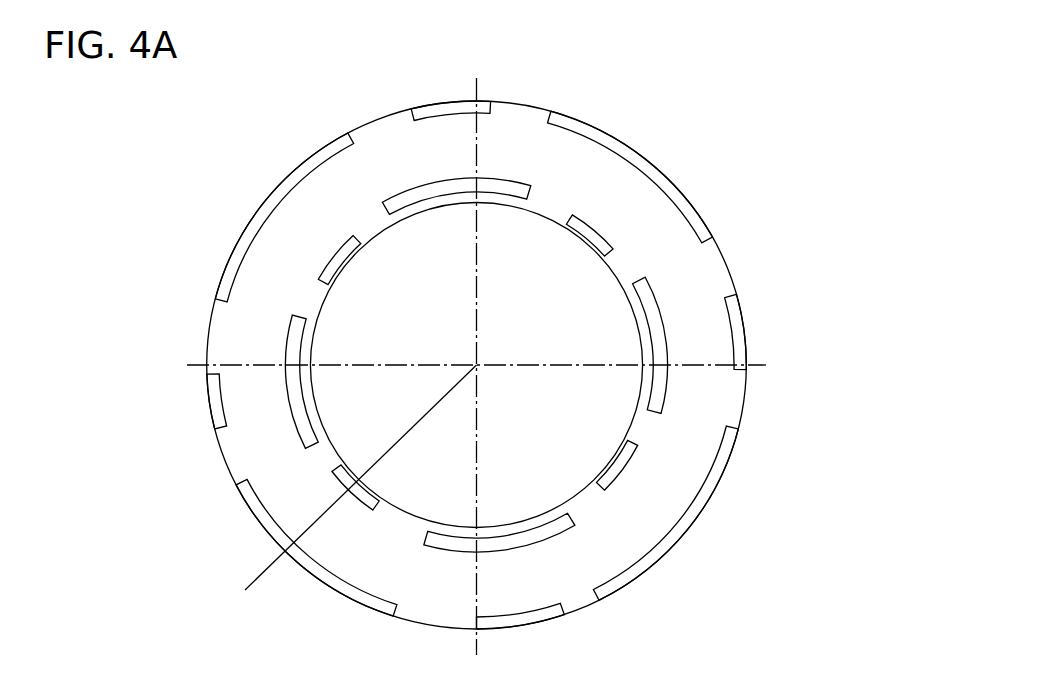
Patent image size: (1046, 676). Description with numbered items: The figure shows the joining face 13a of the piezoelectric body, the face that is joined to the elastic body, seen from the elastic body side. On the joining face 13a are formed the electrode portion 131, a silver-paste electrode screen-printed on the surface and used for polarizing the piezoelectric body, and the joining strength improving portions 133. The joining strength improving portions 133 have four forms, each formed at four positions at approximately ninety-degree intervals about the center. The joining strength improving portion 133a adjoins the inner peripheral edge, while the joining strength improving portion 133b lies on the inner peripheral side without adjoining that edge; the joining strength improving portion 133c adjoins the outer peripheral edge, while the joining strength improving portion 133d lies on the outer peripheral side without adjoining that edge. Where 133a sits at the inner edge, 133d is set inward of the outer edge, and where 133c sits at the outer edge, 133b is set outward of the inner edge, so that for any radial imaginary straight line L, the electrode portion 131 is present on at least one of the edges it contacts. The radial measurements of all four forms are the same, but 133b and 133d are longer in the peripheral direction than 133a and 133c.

The joining face 13a is at (680, 117).
The electrode portion 131 is at (708, 273).
The joining strength improving portions 133 is at (224, 81).
The joining strength improving portion 133a is at (340, 262).
The joining strength improving portion 133b is at (397, 200).
The joining strength improving portion 133c is at (420, 118).
The joining strength improving portion 133d is at (280, 212).
The imaginary straight line L is at (352, 485).